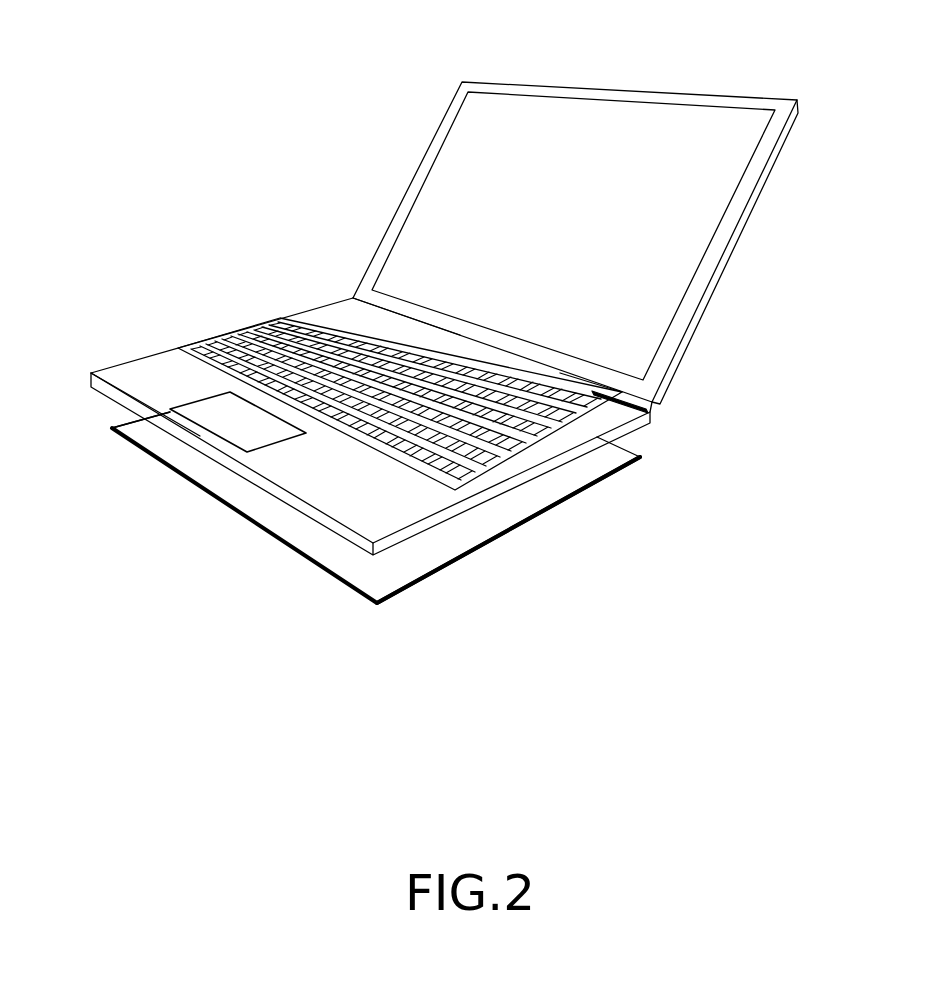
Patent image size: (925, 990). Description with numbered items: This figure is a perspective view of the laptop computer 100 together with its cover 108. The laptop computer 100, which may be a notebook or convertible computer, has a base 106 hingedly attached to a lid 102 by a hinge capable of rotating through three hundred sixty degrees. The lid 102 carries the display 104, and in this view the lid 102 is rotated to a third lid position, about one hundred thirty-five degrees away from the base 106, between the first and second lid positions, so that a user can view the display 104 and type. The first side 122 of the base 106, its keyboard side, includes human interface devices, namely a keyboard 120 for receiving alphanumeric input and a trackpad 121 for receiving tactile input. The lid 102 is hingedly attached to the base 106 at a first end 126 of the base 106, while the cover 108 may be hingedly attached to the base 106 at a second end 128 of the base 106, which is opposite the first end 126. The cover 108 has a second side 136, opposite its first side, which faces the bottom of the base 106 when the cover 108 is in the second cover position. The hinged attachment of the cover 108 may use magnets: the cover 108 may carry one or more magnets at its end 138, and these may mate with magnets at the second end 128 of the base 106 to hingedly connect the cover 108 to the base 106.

The laptop computer 100 is at (425, 370).
The lid 102 is at (575, 204).
The display 104 is at (544, 197).
The base 106 is at (446, 404).
The cover 108 is at (371, 574).
The keyboard 120 is at (339, 263).
The trackpad 121 is at (252, 443).
The first side 122 is at (171, 342).
The first end 126 is at (563, 386).
The second end 128 is at (155, 426).
The second side 136 is at (401, 576).
The end 138 is at (507, 316).